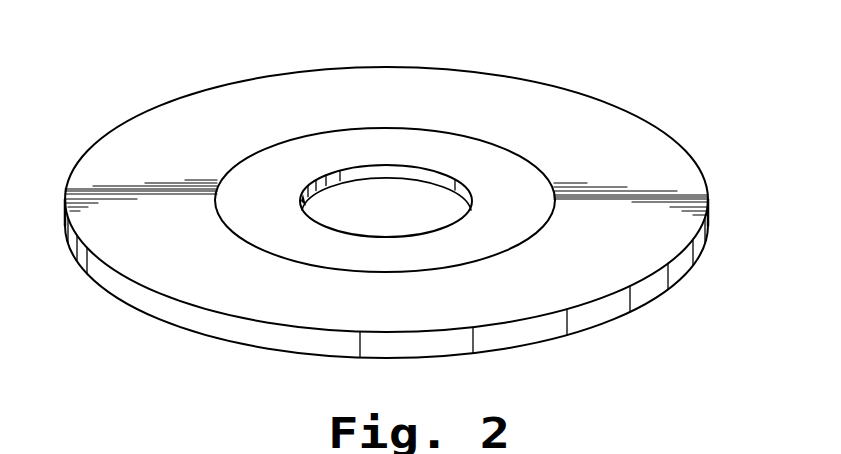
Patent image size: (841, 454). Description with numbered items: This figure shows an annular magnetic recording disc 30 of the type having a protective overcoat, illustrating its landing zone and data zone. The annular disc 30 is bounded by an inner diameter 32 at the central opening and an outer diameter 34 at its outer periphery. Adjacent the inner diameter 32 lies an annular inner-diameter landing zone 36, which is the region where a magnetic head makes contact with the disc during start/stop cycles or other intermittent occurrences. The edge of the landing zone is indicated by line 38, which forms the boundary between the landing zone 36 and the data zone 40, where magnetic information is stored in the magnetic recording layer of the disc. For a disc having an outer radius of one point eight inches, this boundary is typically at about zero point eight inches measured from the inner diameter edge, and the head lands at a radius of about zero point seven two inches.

The annular magnetic recording disc 30 is at (503, 59).
The inner diameter 32 is at (313, 193).
The outer diameter 34 is at (590, 97).
The inner-diameter landing zone 36 is at (322, 243).
The line 38 is at (483, 248).
The data zone 40 is at (620, 153).